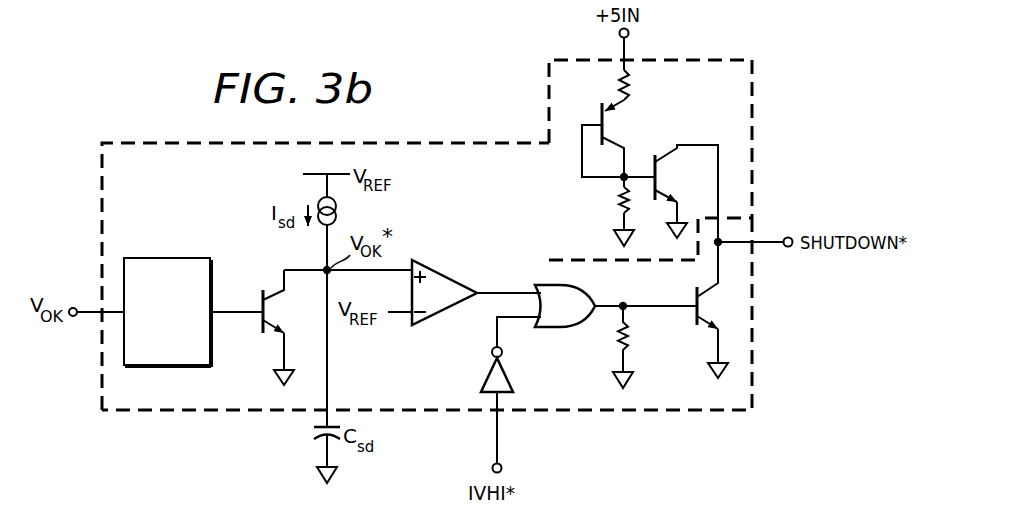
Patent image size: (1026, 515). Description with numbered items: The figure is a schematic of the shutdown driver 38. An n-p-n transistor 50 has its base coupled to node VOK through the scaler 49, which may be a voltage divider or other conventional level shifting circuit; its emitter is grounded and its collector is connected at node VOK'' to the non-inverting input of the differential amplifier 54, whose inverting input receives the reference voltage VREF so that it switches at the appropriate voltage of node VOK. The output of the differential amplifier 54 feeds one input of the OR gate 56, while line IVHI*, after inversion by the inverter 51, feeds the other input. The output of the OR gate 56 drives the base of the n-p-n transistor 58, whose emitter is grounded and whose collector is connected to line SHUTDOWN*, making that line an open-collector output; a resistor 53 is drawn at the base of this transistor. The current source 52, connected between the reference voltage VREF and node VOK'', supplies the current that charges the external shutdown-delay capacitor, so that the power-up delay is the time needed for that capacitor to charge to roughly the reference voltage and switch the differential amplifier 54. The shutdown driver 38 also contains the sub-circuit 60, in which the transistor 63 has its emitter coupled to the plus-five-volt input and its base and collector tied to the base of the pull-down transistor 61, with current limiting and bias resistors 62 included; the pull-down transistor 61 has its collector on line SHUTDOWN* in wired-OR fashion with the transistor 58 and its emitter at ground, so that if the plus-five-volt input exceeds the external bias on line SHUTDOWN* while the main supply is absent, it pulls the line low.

The shutdown driver 38 is at (576, 411).
The scaler 49 is at (157, 258).
The n-p-n transistor 50 is at (262, 328).
The inverter 51 is at (484, 383).
The current source 52 is at (317, 201).
The resistor 53 is at (615, 334).
The differential amplifier 54 is at (443, 273).
The OR gate 56 is at (589, 291).
The n-p-n transistor 58 is at (692, 321).
The sub-circuit 60 is at (550, 112).
The pull-down transistor 61 is at (662, 182).
The current limiting and bias resistors 62 is at (617, 77).
The transistor 63 is at (612, 125).